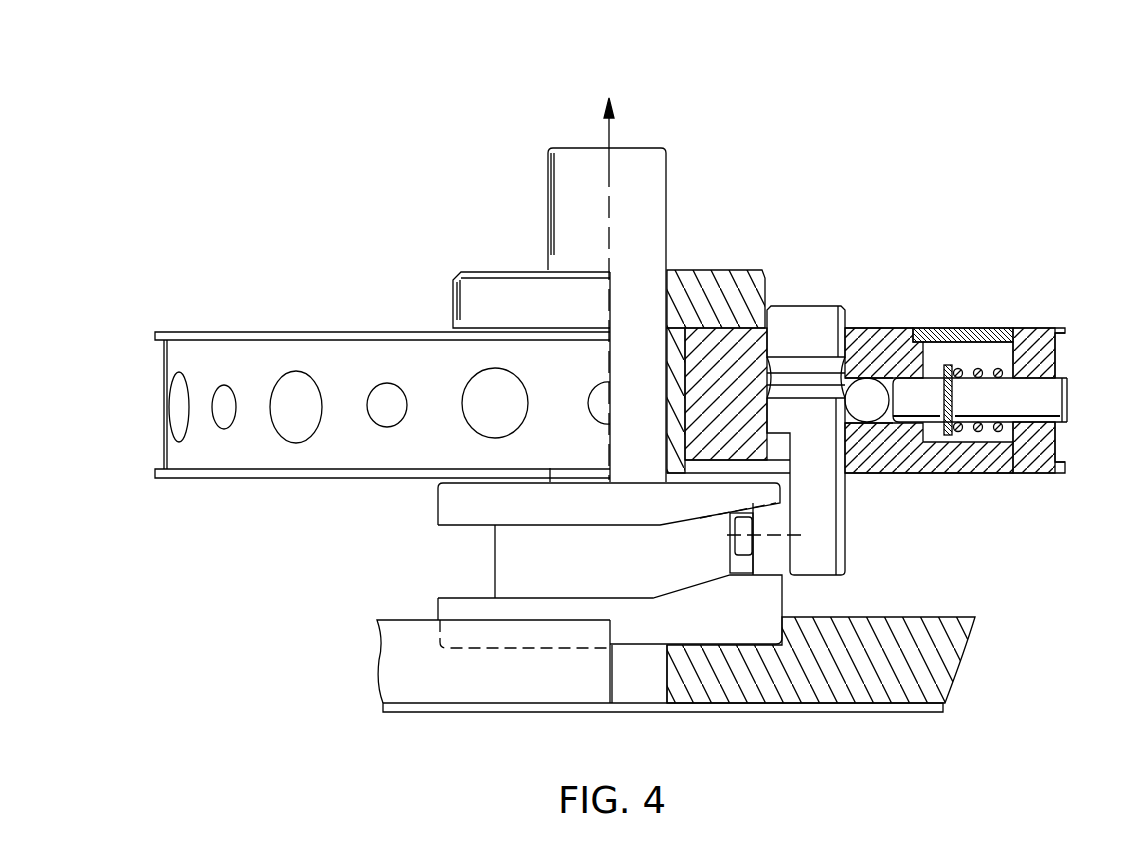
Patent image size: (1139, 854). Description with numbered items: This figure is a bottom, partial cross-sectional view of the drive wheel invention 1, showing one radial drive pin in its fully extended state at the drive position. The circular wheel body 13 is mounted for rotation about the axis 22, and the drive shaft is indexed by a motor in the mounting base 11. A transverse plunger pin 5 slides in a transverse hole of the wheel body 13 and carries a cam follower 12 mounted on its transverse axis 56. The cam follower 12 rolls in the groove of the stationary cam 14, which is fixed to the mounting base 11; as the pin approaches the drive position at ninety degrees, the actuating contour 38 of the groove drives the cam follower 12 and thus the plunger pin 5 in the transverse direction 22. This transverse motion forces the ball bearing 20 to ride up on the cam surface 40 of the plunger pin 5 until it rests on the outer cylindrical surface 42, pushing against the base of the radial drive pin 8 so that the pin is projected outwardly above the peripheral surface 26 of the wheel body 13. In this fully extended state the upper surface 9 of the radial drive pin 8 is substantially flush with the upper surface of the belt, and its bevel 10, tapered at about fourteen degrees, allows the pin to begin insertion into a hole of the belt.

The drive wheel invention 1 is at (1065, 323).
The transverse plunger pin 5 is at (822, 316).
The radial drive pin 8 is at (1048, 384).
The upper surface of radial pin 9 is at (1068, 395).
The bevel 10 is at (1067, 421).
The mounting base 11 is at (914, 704).
The cam follower 12 is at (780, 568).
The wheel body 13 is at (1032, 328).
The stationary cam 14 is at (773, 616).
The ball bearing 20 is at (867, 383).
The axis 22 is at (617, 121).
The peripheral surface 26 is at (1058, 347).
The actuating contour 38 is at (683, 527).
The cam surface 40 is at (779, 364).
The outer cylindrical surface 42 is at (858, 428).
The transverse axis 56 is at (730, 534).